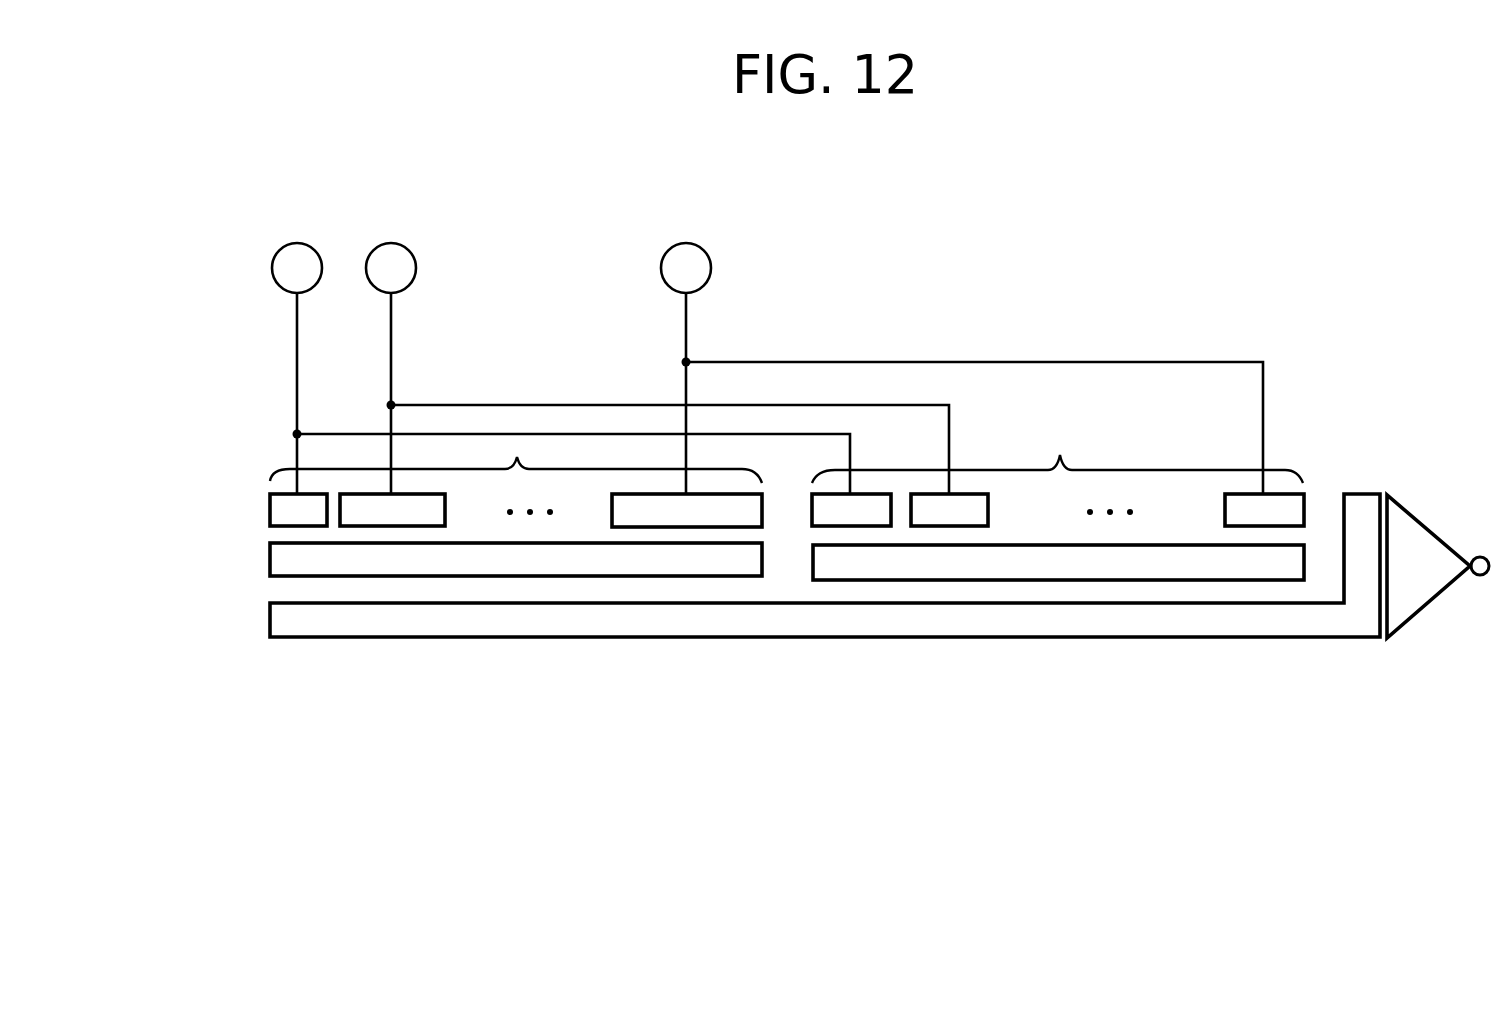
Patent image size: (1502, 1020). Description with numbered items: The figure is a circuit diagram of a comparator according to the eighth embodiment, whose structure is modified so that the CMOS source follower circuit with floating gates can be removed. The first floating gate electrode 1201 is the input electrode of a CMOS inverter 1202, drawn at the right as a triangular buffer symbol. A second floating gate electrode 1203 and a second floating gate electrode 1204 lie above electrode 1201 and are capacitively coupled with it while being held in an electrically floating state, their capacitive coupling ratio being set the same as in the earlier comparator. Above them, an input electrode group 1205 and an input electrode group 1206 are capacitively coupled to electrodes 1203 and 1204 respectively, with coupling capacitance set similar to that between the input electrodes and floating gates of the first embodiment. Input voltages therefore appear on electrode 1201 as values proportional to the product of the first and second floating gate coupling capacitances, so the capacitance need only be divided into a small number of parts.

The first floating gate electrode 1201 is at (1097, 638).
The CMOS inverter 1202 is at (1428, 523).
The second floating gate electrode 1203 is at (270, 562).
The second floating gate electrode 1204 is at (868, 581).
The input electrode group 1205 is at (517, 457).
The input electrode group 1206 is at (1060, 455).